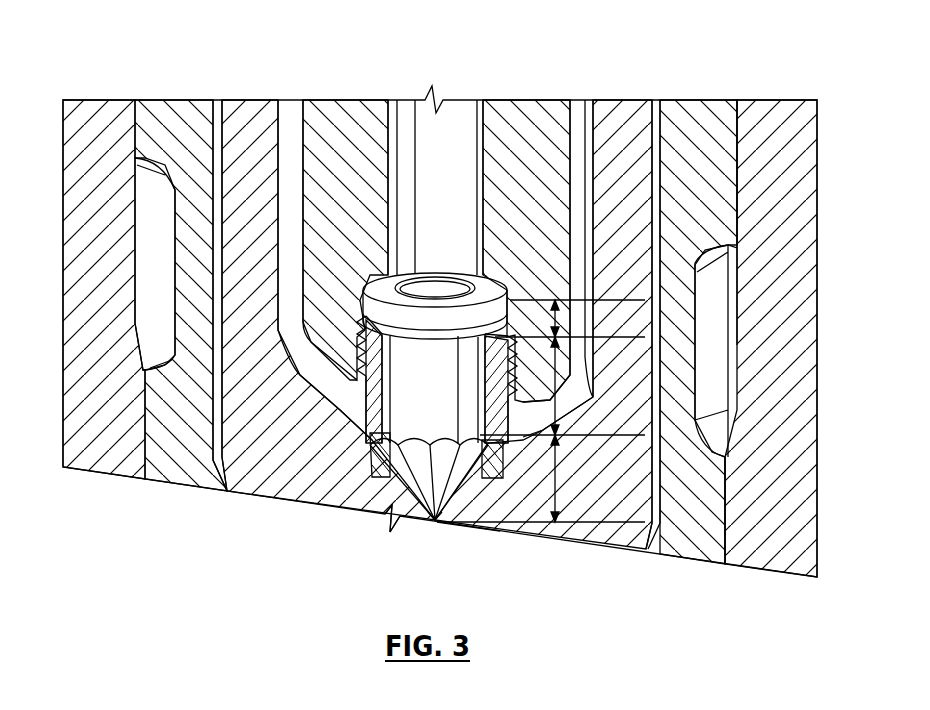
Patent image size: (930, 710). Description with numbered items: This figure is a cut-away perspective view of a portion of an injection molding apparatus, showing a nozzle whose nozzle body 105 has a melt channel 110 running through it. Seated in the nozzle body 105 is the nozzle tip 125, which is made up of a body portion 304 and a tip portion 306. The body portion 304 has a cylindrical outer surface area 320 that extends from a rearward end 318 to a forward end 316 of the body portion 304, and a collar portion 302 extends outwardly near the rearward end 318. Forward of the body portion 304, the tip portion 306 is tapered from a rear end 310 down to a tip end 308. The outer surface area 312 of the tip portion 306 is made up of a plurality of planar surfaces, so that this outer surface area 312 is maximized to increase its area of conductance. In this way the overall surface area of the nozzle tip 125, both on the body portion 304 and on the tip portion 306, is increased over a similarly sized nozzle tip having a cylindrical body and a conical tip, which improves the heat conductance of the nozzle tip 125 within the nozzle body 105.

The nozzle body 105 is at (533, 140).
The melt channel 110 is at (405, 140).
The nozzle tip 125 is at (457, 531).
The collar portion 302 is at (641, 331).
The body portion 304 is at (641, 401).
The tip portion 306 is at (641, 494).
The tip end 308 is at (433, 523).
The rear end 310 is at (367, 443).
The outer surface area 312 is at (365, 510).
The forward end 316 is at (365, 393).
The rearward end 318 is at (363, 320).
The outer surface area 320 is at (415, 358).